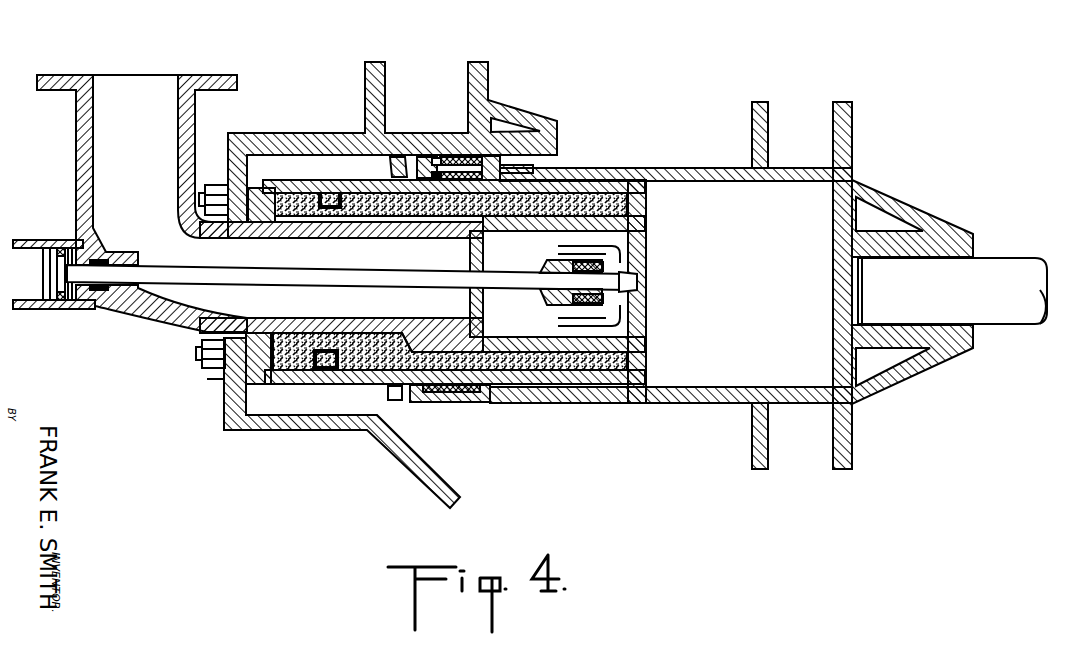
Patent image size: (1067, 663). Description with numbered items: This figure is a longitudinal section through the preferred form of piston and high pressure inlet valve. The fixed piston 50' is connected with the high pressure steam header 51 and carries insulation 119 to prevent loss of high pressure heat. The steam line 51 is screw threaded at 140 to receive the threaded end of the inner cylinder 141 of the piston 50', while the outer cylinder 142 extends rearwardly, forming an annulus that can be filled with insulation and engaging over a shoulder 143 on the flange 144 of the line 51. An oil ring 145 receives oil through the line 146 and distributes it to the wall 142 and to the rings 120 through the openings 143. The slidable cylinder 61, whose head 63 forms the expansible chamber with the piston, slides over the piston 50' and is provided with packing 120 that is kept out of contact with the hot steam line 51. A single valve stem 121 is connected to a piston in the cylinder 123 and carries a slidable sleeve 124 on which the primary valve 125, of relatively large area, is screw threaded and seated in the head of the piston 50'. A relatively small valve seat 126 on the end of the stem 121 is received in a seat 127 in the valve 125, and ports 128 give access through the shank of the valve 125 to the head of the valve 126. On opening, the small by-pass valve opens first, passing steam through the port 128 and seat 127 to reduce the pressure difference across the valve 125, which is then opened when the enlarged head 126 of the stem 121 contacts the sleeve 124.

The high pressure steam header 51 is at (178, 152).
The cylinder 123 is at (24, 240).
The ports 128 is at (48, 240).
The valve stem 121 is at (194, 277).
The flange 144 is at (305, 318).
The shoulder / openings 143 is at (297, 447).
The outer cylinder 142 is at (363, 176).
The insulation 119 is at (355, 379).
The oil ring 145 is at (320, 370).
The oil line 146 is at (212, 382).
The packing 120 is at (455, 160).
The screw thread 140 is at (450, 243).
The inner cylinder 141 is at (550, 337).
The fixed piston 50' is at (676, 285).
The slidable sleeve 124 is at (555, 266).
The primary valve 125 is at (646, 262).
The small valve seat / enlarged head 126 is at (640, 282).
The seat 127 is at (646, 301).
The slidable cylinder 61 is at (677, 400).
The head 63 is at (833, 360).